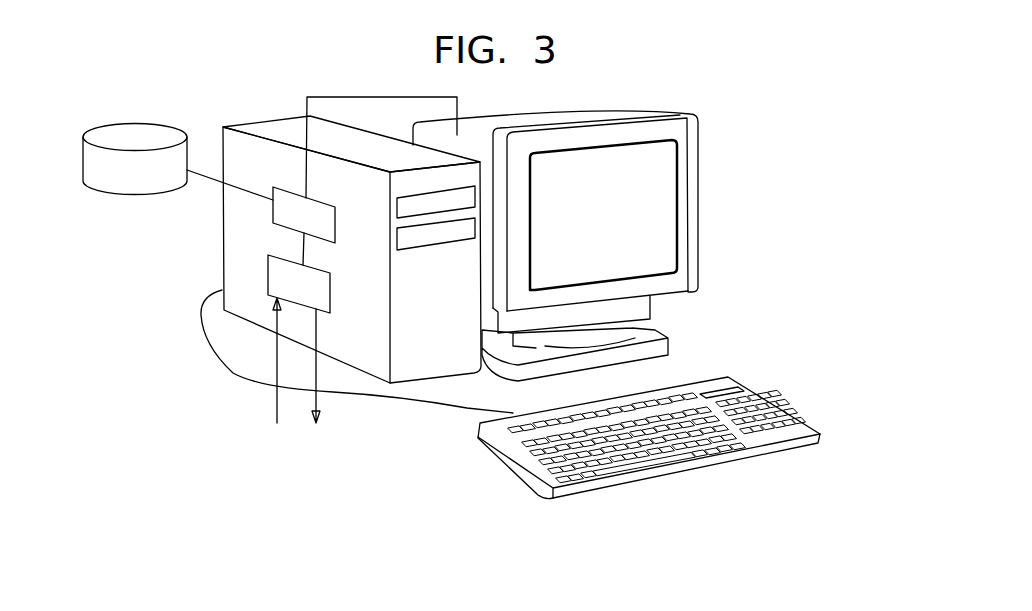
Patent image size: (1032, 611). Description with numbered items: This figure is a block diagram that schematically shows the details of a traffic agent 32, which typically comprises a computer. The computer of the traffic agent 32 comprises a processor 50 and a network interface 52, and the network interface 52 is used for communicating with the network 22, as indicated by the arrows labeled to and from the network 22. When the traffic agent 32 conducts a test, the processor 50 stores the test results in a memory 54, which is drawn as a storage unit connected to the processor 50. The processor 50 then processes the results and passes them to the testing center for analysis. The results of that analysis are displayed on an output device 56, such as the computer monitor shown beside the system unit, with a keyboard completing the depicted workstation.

The computer workstation 32 is at (763, 100).
The processor 50 is at (335, 227).
The network interface 52 is at (330, 297).
The storage device 54 is at (160, 130).
The display 56 is at (618, 135).
The network 22 is at (301, 392).